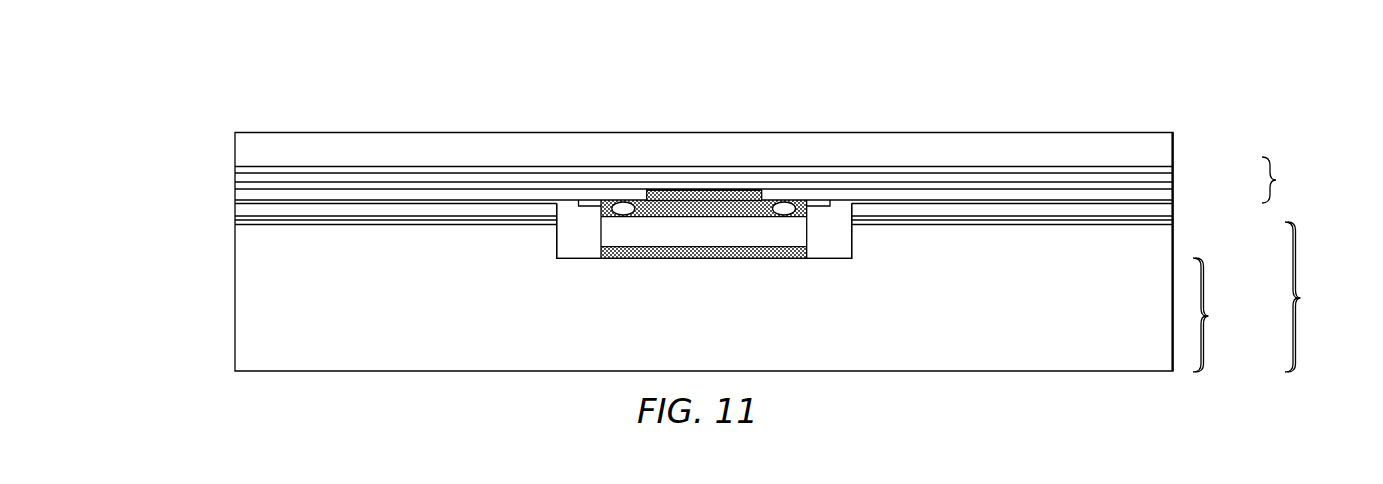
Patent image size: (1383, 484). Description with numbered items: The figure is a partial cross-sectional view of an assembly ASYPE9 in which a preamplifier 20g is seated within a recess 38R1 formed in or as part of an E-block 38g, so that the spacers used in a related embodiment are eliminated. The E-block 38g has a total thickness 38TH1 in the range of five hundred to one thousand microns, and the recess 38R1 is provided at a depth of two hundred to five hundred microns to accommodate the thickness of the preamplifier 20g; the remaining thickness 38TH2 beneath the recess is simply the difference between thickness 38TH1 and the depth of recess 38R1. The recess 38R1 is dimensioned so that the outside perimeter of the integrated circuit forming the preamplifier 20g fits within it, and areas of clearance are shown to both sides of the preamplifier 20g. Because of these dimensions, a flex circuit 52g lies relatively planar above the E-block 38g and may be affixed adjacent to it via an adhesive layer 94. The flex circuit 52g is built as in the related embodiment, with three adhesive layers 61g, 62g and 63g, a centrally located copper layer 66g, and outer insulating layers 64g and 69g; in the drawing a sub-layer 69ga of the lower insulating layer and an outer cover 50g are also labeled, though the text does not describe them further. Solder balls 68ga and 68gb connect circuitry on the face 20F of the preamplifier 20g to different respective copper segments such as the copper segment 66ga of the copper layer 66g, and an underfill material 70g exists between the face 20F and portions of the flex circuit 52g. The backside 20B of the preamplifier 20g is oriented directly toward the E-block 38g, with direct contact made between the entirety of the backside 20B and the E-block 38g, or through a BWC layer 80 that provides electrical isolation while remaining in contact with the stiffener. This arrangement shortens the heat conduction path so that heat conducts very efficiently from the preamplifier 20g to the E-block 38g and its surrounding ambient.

The assembly ASYPE9 is at (897, 87).
The cover layer 50g is at (408, 143).
The flex circuit 52g is at (1290, 180).
The adhesive layer 61g is at (1175, 163).
The adhesive layer 62g is at (1175, 185).
The adhesive layer 63g is at (1175, 202).
The outer insulating layer 64g is at (243, 176).
The copper layer 66g is at (136, 195).
The copper segment 66ga is at (245, 194).
The outer insulating layer 69g is at (136, 214).
The sub-layer 69ga is at (271, 212).
The adhesive layer 94 is at (393, 226).
The E-block 38g is at (473, 332).
The recess 38R1 is at (877, 260).
The thickness 38TH1 is at (1328, 297).
The remaining thickness 38TH2 is at (1235, 315).
The preamplifier 20g is at (741, 232).
The face 20F is at (683, 197).
The backside 20B is at (656, 252).
The underfill material 70g is at (733, 200).
The solder ball 68ga is at (604, 207).
The solder ball 68gb is at (805, 207).
The BWC layer 80 is at (709, 262).